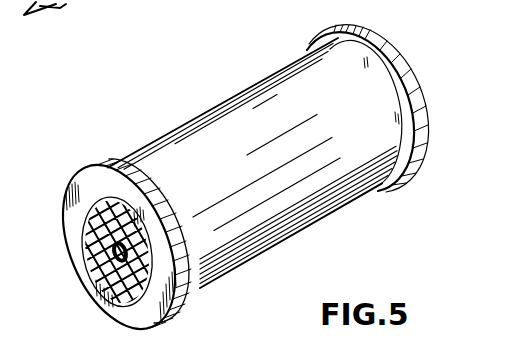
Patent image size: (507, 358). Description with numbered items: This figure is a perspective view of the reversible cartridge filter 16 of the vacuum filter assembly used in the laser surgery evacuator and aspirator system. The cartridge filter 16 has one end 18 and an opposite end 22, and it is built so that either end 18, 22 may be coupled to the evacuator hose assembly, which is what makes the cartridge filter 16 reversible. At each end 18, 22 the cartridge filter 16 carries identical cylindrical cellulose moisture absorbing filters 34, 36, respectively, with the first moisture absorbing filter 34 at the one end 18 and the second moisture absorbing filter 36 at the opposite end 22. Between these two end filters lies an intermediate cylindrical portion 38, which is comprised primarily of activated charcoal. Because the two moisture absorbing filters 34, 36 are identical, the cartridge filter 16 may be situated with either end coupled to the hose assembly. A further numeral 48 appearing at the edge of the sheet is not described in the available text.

The reversible cartridge filter 16 is at (234, 173).
The end 18 is at (50, 298).
The opposite end 22 is at (379, 96).
The cylindrical cellulose moisture absorbing filter 34 is at (104, 238).
The cylindrical cellulose moisture absorbing filter 36 is at (326, 30).
The intermediate cylindrical portion 38 is at (290, 237).
The guide member 48 is at (60, 10).